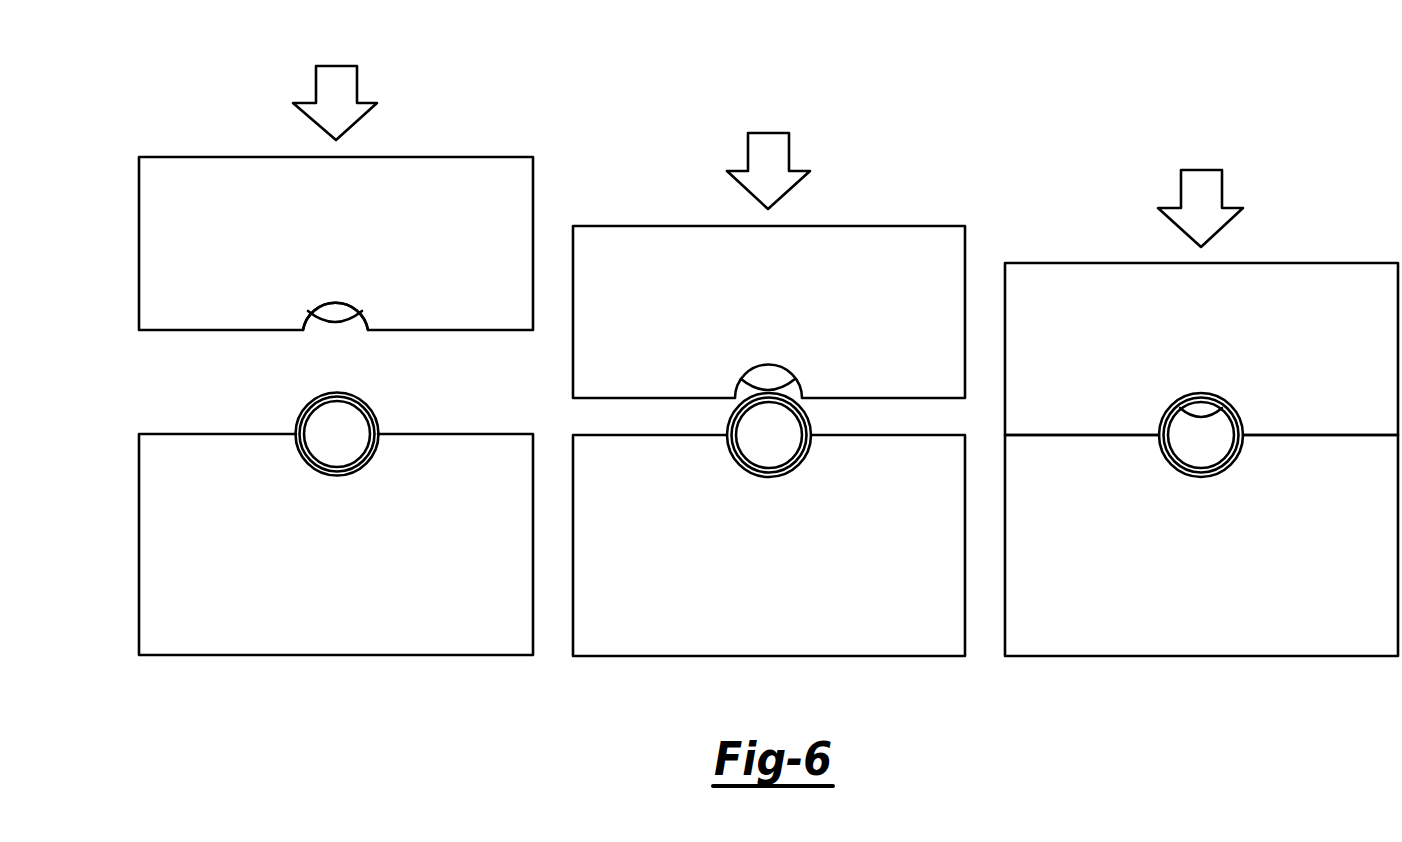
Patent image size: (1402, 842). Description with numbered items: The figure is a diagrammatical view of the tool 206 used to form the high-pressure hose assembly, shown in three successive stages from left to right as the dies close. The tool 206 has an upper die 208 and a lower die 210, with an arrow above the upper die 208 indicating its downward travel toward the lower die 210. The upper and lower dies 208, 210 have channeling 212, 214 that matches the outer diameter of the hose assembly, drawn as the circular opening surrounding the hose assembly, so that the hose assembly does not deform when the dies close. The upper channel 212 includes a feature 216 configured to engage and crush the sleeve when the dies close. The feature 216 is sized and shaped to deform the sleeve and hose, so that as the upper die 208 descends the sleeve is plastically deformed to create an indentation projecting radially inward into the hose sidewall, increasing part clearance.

The tool 206 is at (446, 84).
The upper die 208 is at (237, 157).
The lower die 210 is at (237, 657).
The upper channel 212 is at (323, 300).
The lower channel 214 is at (345, 475).
The feature 216 is at (338, 323).